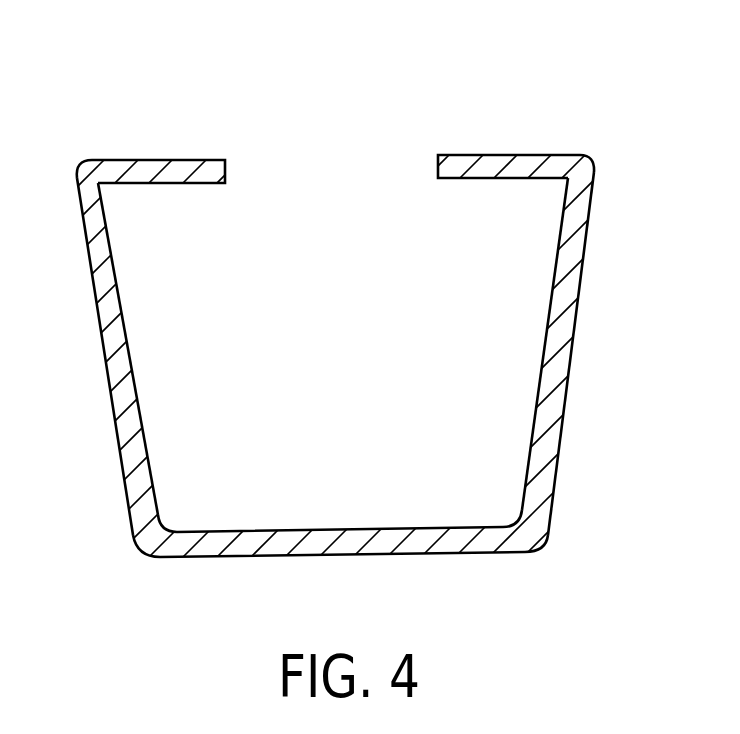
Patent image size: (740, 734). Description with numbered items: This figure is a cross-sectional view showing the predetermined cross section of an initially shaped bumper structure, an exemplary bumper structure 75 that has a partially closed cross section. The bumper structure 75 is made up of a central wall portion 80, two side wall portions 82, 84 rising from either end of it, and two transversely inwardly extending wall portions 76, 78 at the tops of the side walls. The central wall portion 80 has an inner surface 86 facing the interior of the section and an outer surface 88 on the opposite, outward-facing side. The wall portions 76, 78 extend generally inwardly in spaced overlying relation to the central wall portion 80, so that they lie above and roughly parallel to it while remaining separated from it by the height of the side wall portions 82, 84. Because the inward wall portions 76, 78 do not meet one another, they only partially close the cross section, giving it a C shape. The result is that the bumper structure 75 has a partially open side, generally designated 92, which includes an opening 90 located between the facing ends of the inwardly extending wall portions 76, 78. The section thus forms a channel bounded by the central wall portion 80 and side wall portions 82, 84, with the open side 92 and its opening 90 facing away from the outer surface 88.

The bumper structure 75 is at (466, 116).
The transversely inwardly extending wall portion 76 is at (185, 168).
The transversely inwardly extending wall portion 78 is at (512, 163).
The central wall portion 80 is at (462, 540).
The side wall portion 82 is at (115, 347).
The side wall portion 84 is at (557, 340).
The inner surface 86 is at (322, 530).
The outer surface 88 is at (330, 556).
The opening 90 is at (271, 126).
The partially open side 92 is at (374, 116).